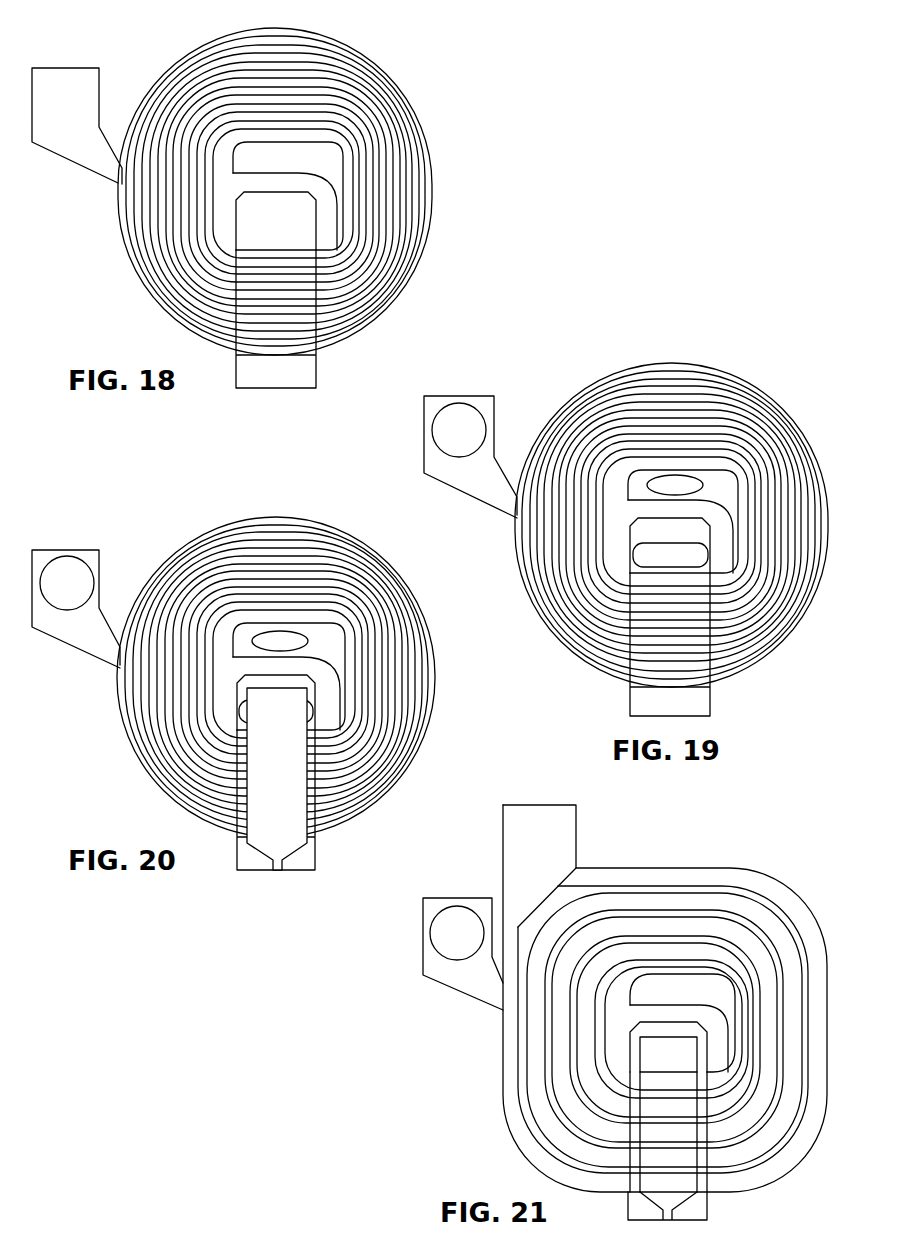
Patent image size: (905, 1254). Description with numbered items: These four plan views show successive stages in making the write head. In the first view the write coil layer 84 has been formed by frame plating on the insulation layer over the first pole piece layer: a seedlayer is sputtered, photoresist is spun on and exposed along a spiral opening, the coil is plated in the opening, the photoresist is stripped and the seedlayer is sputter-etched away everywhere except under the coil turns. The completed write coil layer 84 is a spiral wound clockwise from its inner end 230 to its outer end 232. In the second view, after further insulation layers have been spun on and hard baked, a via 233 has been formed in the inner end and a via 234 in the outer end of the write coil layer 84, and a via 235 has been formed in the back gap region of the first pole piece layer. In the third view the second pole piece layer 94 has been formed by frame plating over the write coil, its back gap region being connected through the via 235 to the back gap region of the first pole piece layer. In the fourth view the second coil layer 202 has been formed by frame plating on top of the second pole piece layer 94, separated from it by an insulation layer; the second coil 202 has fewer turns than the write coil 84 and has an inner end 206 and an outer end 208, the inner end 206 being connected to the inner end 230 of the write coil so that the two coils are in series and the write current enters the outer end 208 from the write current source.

In FIG. 18, the outer end of the write coil layer 232 is at (72, 92).
In FIG. 20, the outer end of the write coil layer 232 is at (67, 567).
In FIG. 21, the outer end of the write coil layer 232 is at (440, 943).
In FIG. 18, the write coil layer 84 is at (431, 184).
In FIG. 18, the inner end of the write coil layer 230 is at (275, 160).
In FIG. 19, the via in the outer end of the write coil layer 234 is at (463, 420).
In FIG. 19, the via in the back gap region of the first pole piece layer 235 is at (657, 547).
In FIG. 19, the via in the inner end of the write coil layer 233 is at (676, 488).
In FIG. 20, the second pole piece layer 94 is at (290, 809).
In FIG. 21, the second pole piece layer 94 is at (688, 1045).
In FIG. 21, the outer end of the second coil 208 is at (566, 822).
In FIG. 21, the inner end of the second coil 206 is at (675, 980).
In FIG. 21, the second coil layer 202 is at (563, 1095).